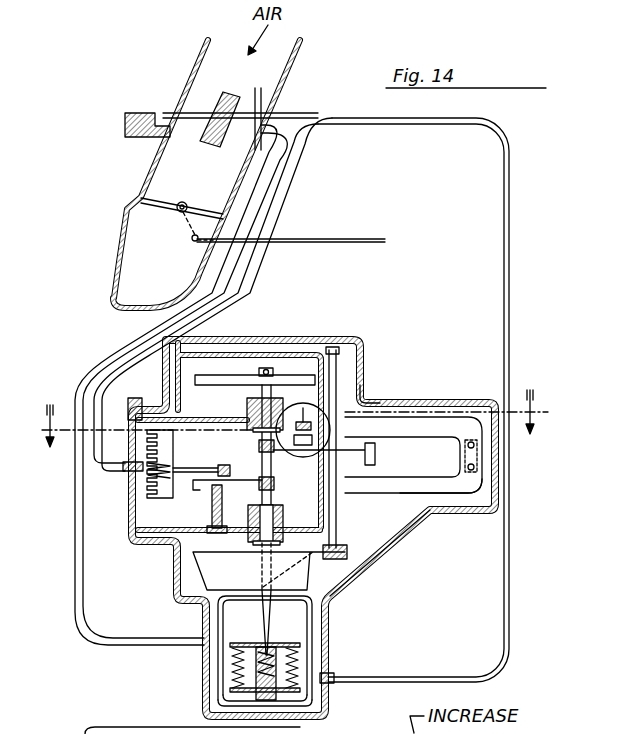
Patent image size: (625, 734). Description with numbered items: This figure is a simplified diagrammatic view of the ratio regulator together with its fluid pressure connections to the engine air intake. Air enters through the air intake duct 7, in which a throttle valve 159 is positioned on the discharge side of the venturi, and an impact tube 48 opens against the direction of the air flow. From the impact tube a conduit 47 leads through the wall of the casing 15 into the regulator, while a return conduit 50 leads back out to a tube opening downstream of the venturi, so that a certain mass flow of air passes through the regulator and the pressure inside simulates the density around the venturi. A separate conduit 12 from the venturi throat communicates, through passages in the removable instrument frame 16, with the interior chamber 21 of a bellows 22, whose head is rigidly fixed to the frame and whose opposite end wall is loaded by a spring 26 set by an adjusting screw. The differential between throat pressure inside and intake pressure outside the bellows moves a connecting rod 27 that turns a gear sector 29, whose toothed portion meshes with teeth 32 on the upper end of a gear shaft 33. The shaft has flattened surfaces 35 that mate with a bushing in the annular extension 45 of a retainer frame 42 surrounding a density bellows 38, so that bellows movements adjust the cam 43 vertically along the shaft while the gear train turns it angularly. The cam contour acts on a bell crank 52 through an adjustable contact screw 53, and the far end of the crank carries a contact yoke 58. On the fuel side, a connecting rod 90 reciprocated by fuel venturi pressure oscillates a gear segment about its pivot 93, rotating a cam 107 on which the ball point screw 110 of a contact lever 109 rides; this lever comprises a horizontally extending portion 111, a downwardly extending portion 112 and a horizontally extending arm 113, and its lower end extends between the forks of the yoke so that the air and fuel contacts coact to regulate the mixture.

The air intake duct 7 is at (194, 71).
The conduit 12 is at (287, 170).
The casing 15 is at (289, 418).
The instrument frame 16 is at (168, 544).
The interior chamber of bellows 21 is at (140, 465).
The bellows 22 is at (135, 417).
The spring 26 is at (146, 487).
The connecting rod 27 is at (215, 476).
The gear sector 29 is at (244, 480).
The teeth 32 is at (274, 486).
The gear shaft 33 is at (258, 514).
The flattened surfaces 35 is at (269, 625).
The density bellows 38 is at (230, 667).
The retainer frame 42 is at (232, 697).
The cam 43 is at (207, 571).
The annular extension 45 is at (379, 550).
The conduit 47 is at (318, 118).
The impact tube 48 is at (263, 100).
The return conduit 50 is at (260, 206).
The bell crank 52 is at (313, 559).
The contact screw 53 is at (250, 598).
The contact yoke 58 is at (457, 491).
The connecting rod 90 is at (303, 428).
The pivot 93 is at (328, 463).
The cam 107 is at (218, 376).
The contact lever 109 is at (421, 415).
The ball point screw 110 is at (267, 368).
The horizontally extending portion 111 is at (312, 366).
The downwardly extending portion 112 is at (355, 393).
The horizontally extending arm 113 is at (444, 421).
The throttle valve 159 is at (142, 214).